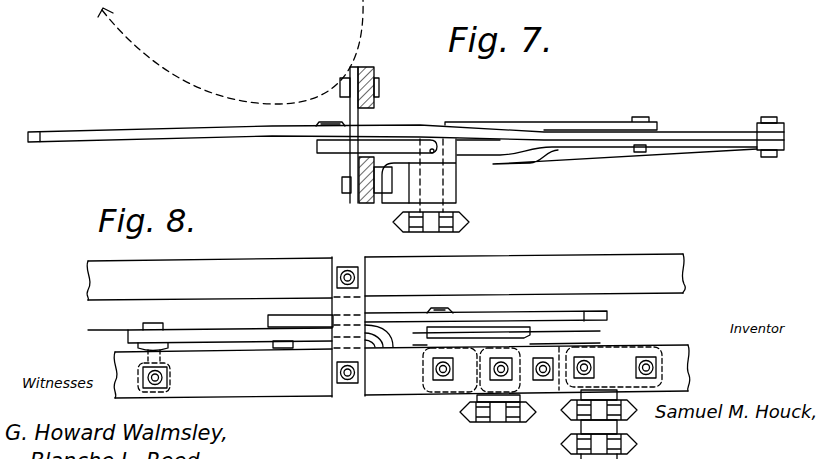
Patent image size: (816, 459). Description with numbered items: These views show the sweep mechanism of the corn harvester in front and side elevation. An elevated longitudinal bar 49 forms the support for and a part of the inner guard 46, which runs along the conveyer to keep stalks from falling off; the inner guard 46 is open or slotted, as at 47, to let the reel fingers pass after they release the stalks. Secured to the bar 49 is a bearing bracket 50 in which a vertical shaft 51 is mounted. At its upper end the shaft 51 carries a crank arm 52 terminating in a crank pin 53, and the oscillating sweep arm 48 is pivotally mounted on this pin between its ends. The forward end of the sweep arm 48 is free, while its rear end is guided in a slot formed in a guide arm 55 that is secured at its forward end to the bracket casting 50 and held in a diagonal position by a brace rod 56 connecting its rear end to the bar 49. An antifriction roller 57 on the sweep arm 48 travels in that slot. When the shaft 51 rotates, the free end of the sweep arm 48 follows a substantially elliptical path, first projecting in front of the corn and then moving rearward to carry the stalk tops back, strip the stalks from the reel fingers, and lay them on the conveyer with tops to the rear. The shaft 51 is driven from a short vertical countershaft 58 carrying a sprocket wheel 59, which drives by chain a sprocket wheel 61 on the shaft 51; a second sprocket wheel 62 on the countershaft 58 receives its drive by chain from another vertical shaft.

In FIG. 7, the inner guard 46 is at (362, 70).
In FIG. 8, the inner guard 46 is at (287, 254).
In FIG. 7, the slot 47 is at (360, 115).
In FIG. 8, the slot 47 is at (120, 328).
In FIG. 7, the sweep arm 48 is at (125, 119).
In FIG. 8, the sweep arm 48 is at (547, 312).
In FIG. 7, the elevated longitudinal bar 49 is at (360, 203).
In FIG. 8, the elevated longitudinal bar 49 is at (313, 380).
In FIG. 7, the bearing bracket 50 is at (454, 190).
In FIG. 8, the bearing bracket 50 is at (480, 396).
In FIG. 7, the vertical shaft 51 is at (405, 200).
In FIG. 7, the crank arm 52 is at (325, 150).
In FIG. 8, the crank arm 52 is at (470, 330).
In FIG. 7, the crank pin 53 is at (336, 124).
In FIG. 8, the crank pin 53 is at (440, 307).
In FIG. 7, the guide arm 55 is at (503, 160).
In FIG. 8, the guide arm 55 is at (197, 323).
In FIG. 7, the brace rod 56 is at (710, 150).
In FIG. 8, the brace rod 56 is at (128, 342).
In FIG. 7, the antifriction roller 57 is at (655, 130).
In FIG. 8, the antifriction roller 57 is at (275, 348).
In FIG. 8, the vertical countershaft 58 is at (614, 453).
In FIG. 8, the sprocket wheel 59 is at (602, 402).
In FIG. 7, the sprocket wheel 61 is at (462, 222).
In FIG. 8, the sprocket wheel 61 is at (467, 419).
In FIG. 8, the second sprocket wheel 62 is at (572, 440).